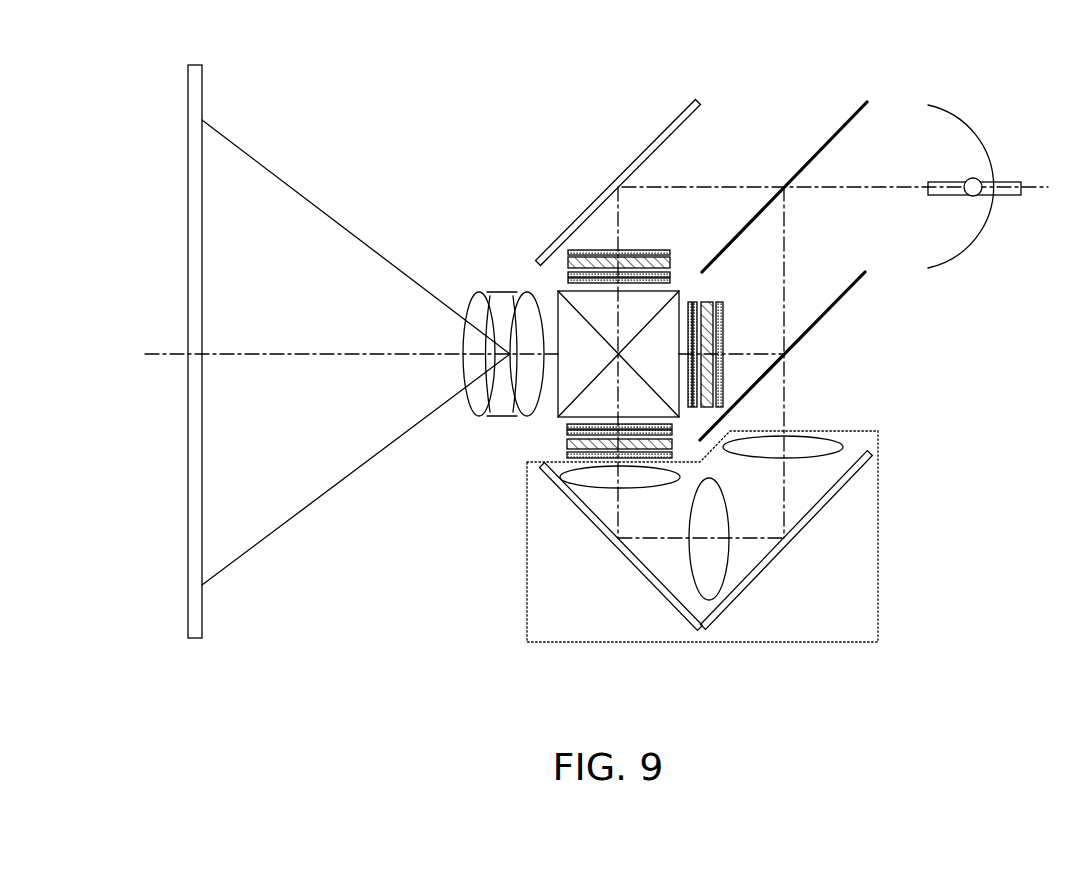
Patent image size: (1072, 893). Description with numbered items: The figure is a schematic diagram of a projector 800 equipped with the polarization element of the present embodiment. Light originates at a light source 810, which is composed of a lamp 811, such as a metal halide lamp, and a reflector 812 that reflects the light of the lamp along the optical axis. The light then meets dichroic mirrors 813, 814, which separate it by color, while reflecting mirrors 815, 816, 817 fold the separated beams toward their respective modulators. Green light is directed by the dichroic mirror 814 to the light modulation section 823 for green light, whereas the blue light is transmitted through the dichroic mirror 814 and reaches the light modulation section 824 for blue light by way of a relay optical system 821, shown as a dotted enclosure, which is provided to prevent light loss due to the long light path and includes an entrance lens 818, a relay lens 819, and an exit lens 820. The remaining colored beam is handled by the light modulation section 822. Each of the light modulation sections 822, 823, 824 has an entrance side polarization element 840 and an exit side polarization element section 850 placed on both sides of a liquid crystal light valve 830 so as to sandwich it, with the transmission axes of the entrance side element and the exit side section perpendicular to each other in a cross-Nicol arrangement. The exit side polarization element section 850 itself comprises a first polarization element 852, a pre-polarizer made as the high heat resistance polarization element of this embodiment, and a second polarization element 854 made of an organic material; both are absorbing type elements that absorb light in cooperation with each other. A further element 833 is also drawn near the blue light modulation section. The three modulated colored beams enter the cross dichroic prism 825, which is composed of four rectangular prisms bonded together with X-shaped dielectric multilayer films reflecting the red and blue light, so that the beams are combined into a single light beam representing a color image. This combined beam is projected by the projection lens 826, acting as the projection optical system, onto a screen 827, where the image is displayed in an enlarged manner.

The projector 800 is at (260, 104).
The light source 810 is at (1000, 159).
The lamp 811 is at (977, 180).
The reflector 812 is at (977, 240).
The dichroic mirror 813 is at (836, 134).
The dichroic mirror 814 is at (851, 284).
The reflecting mirror 815 is at (840, 487).
The reflecting mirror 816 is at (630, 565).
The reflecting mirror 817 is at (656, 140).
The entrance lens 818 is at (808, 440).
The relay lens 819 is at (720, 555).
The exit lens 820 is at (592, 480).
The relay optical system 821 is at (747, 504).
The light modulation section 822 is at (550, 216).
The light modulation section 823 is at (740, 320).
The light modulation section 824 is at (552, 447).
The cross dichroic prism 825 is at (676, 290).
The projection lens 826 is at (545, 422).
The screen 827 is at (196, 640).
The liquid crystal light valve 830 is at (566, 251).
The light incident side polarizer 833 is at (677, 448).
The entrance side polarization element 840 is at (590, 251).
The exit side polarization element section 850 is at (550, 235).
The first polarization element 852 is at (567, 262).
The second polarization element 854 is at (567, 279).